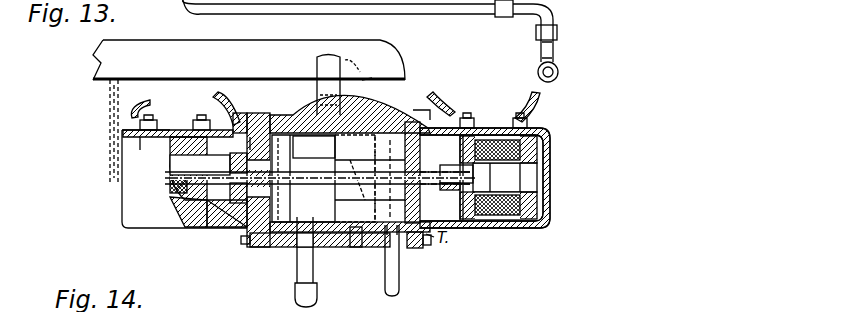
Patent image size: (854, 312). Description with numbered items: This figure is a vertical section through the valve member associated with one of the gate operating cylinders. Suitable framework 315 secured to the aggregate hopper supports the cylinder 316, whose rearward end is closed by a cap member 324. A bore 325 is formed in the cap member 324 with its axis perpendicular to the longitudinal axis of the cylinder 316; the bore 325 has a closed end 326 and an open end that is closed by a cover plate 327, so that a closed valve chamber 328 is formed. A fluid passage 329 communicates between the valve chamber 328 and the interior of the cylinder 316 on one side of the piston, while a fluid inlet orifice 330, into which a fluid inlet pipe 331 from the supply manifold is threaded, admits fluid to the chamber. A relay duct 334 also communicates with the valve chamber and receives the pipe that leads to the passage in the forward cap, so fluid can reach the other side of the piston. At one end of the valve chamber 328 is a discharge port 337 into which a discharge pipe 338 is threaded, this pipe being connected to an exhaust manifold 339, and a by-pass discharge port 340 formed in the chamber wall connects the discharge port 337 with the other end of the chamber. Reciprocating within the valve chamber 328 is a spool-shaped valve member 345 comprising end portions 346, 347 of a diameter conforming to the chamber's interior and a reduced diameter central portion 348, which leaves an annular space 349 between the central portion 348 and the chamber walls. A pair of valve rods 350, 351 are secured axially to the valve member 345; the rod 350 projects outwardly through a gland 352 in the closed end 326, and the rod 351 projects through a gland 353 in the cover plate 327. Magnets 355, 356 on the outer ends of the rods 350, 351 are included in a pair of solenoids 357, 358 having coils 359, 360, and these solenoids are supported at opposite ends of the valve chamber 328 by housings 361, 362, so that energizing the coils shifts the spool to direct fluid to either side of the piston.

The framework 315 is at (202, 53).
The cylinder 316 is at (292, 83).
The cap member 324 is at (370, 75).
The bore 325 is at (405, 115).
The closed end 326 is at (258, 232).
The cover plate 327 is at (428, 120).
The valve chamber 328 is at (391, 197).
The fluid passage 329 is at (303, 178).
The fluid inlet orifice 330 is at (303, 80).
The fluid inlet pipe 331 is at (370, 73).
The relay duct 334 is at (300, 262).
The discharge port 337 is at (397, 246).
The discharge pipe 338 is at (560, 40).
The exhaust manifold 339 is at (560, 72).
The by-pass discharge port 340 is at (275, 242).
The valve member 345 is at (178, 158).
The end portion 346 is at (350, 178).
The end portion 347 is at (344, 178).
The reduced diameter central portion 348 is at (288, 115).
The annular space 349 is at (373, 205).
The valve rod 350 is at (185, 208).
The valve rod 351 is at (359, 177).
The gland 352 is at (225, 205).
The gland 353 is at (485, 178).
The magnet 355 is at (125, 168).
The magnet 356 is at (462, 200).
The solenoid 357 is at (192, 140).
The solenoid 358 is at (548, 170).
The coil 359 is at (180, 145).
The coil 360 is at (497, 128).
The housing 361 is at (135, 196).
The housing 362 is at (550, 198).